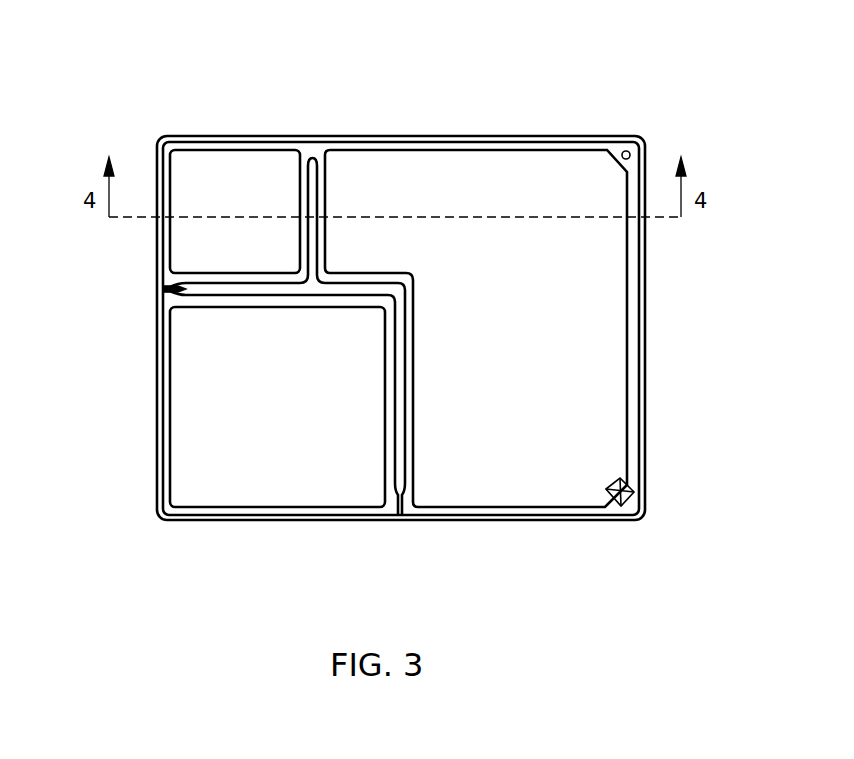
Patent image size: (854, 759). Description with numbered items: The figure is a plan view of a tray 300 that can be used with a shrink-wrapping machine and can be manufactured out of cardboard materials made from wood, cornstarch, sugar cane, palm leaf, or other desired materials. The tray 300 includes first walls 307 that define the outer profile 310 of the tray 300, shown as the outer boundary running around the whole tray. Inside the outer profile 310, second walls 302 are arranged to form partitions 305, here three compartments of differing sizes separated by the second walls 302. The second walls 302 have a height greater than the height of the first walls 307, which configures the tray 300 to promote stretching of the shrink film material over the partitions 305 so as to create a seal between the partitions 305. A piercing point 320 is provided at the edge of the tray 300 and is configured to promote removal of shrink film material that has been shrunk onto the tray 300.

The tray 300 is at (530, 88).
The second walls 302 is at (313, 240).
The partitions 305 is at (402, 289).
The first walls 307 is at (393, 135).
The outer profile 310 is at (196, 118).
The piercing point 320 is at (146, 288).